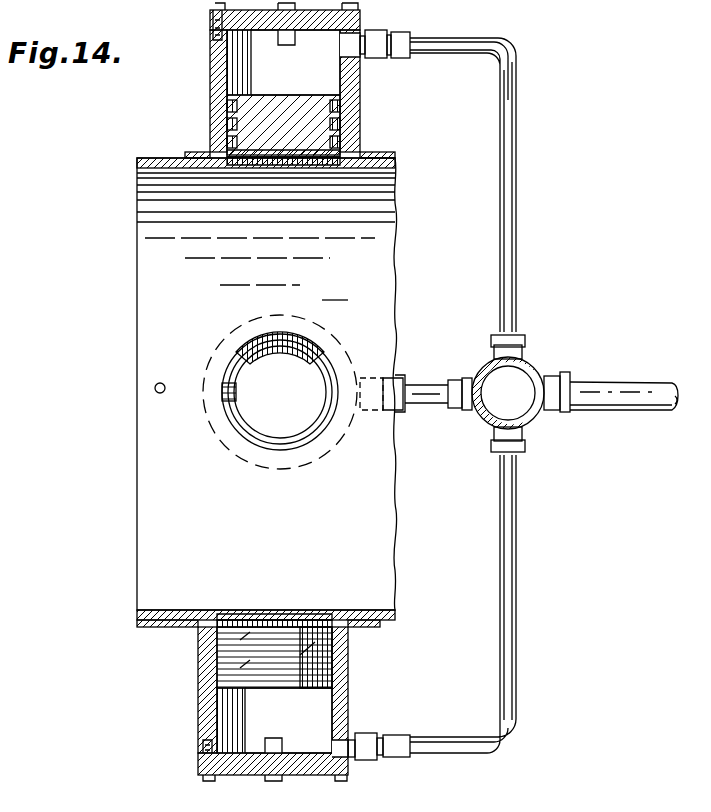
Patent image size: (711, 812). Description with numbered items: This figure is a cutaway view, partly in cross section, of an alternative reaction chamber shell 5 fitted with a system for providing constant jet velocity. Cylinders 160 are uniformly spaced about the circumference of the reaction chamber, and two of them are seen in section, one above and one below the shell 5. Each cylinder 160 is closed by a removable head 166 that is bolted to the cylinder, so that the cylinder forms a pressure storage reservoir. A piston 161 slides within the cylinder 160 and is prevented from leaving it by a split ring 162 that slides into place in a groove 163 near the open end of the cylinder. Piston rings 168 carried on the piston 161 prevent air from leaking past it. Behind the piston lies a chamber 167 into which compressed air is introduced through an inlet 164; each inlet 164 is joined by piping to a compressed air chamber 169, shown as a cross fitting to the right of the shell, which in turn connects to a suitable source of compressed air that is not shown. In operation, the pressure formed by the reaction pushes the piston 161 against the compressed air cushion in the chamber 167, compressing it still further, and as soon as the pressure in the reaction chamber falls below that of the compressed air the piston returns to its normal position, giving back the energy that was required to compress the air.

The reaction chamber shell 5 is at (390, 156).
The cylinder 160 is at (210, 118).
The piston 161 is at (235, 135).
The split ring 162 is at (340, 165).
The groove 163 is at (248, 160).
The inlet 164 is at (362, 45).
The removable head 166 is at (210, 17).
The chamber 167 is at (250, 70).
The piston rings 168 is at (340, 142).
The compressed air chamber 169 is at (528, 366).